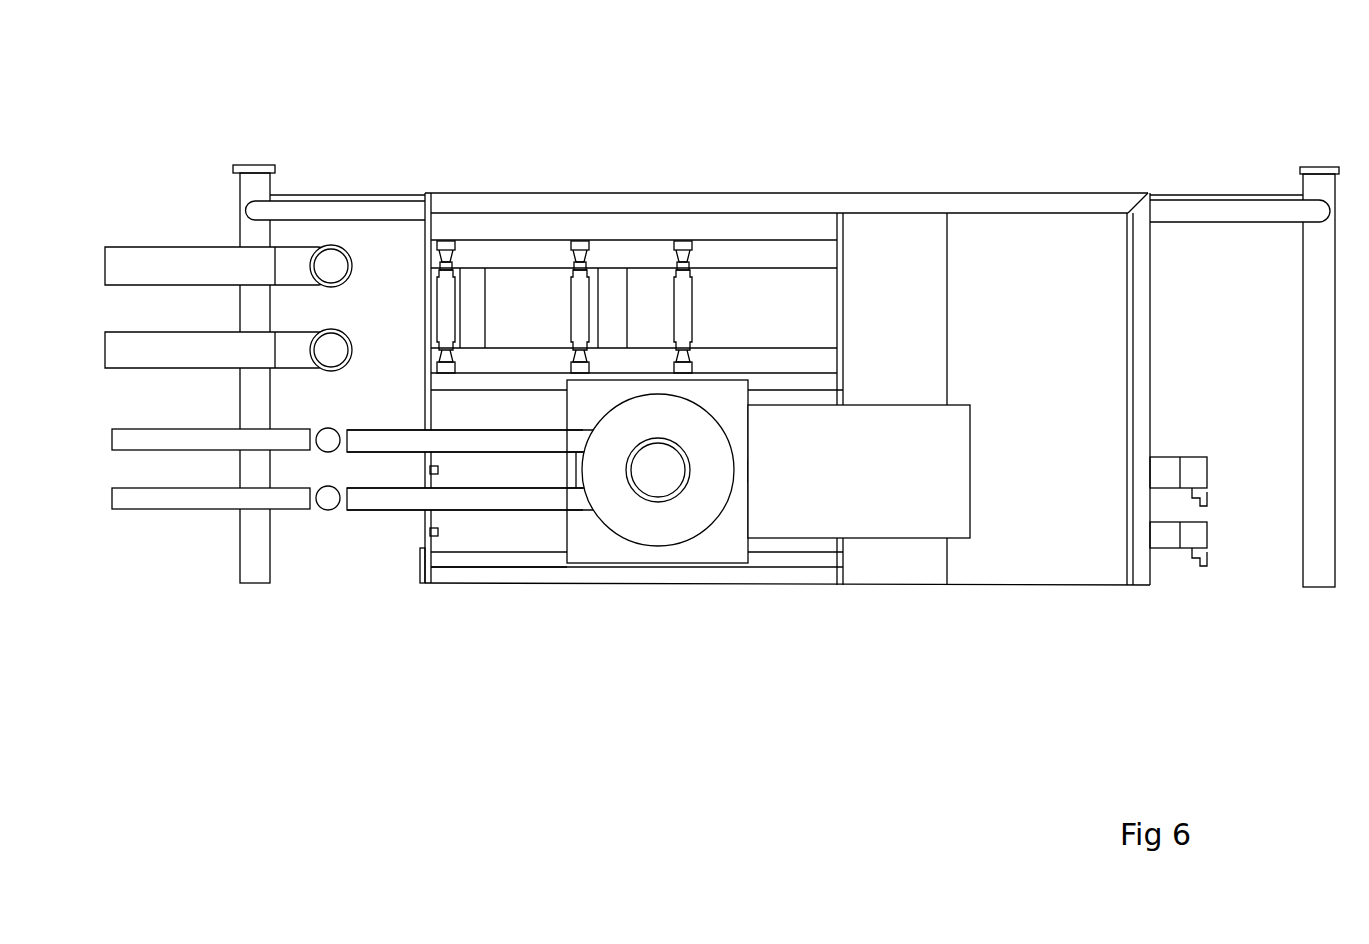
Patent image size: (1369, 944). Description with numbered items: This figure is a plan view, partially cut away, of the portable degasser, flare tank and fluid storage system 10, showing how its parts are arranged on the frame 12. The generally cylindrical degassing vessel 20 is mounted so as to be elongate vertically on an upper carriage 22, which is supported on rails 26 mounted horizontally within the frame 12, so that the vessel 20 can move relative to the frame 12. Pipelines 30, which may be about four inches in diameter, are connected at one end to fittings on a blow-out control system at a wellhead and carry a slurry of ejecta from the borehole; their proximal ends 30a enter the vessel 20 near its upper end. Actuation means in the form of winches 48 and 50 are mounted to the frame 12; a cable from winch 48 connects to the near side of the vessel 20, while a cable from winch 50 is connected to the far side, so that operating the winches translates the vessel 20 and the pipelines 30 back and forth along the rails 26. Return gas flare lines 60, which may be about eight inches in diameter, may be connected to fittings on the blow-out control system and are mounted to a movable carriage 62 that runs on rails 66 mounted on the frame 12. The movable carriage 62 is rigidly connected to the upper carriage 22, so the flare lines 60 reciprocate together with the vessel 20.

The portable degasser, flare tank and fluid storage system 10 is at (1063, 163).
The frame 12 is at (922, 200).
The degassing vessel 20 is at (710, 537).
The upper carriage 22 is at (630, 567).
The rails 26 is at (495, 558).
The pipelines 30 is at (400, 439).
The proximal ends 30a is at (552, 446).
The winch 48 is at (1204, 457).
The winch 50 is at (1208, 548).
The return gas flare lines 60 is at (175, 330).
The movable carriage 62 is at (446, 241).
The rails 66 is at (805, 258).